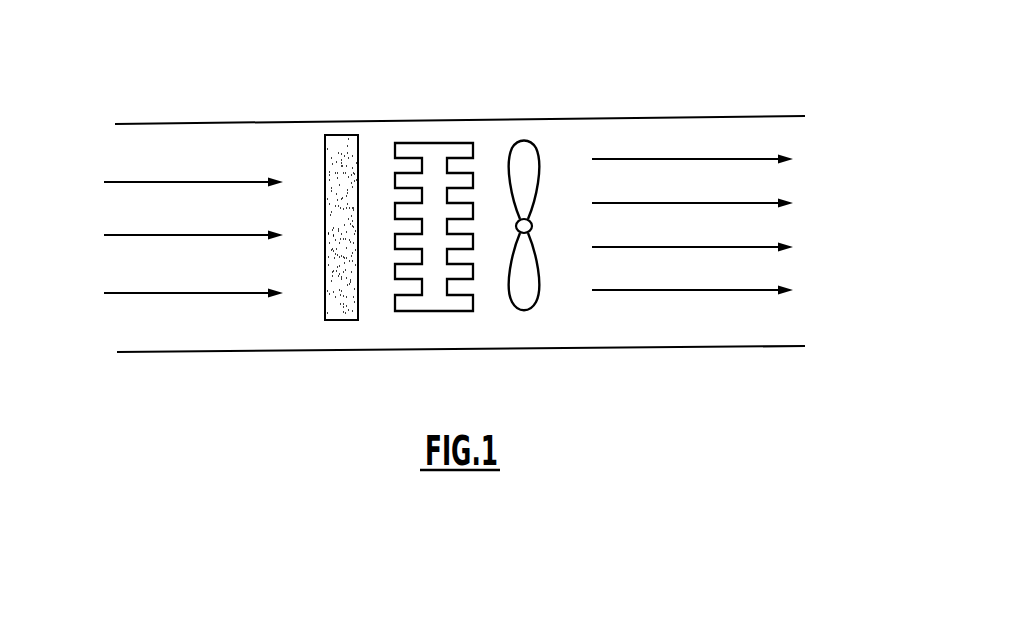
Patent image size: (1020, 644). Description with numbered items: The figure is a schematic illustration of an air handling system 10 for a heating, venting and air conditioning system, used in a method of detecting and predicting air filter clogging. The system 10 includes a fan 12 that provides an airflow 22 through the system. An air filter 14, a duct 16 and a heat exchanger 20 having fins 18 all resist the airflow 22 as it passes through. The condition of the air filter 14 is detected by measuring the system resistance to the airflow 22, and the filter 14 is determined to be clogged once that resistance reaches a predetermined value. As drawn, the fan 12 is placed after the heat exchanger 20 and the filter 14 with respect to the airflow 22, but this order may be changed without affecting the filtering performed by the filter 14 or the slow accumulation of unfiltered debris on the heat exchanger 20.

The air handling system 10 is at (577, 89).
The fan 12 is at (528, 326).
The air filter 14 is at (340, 317).
The duct 16 is at (568, 344).
The fins 18 is at (428, 276).
The heat exchanger 20 is at (433, 287).
The airflow 22 is at (203, 309).